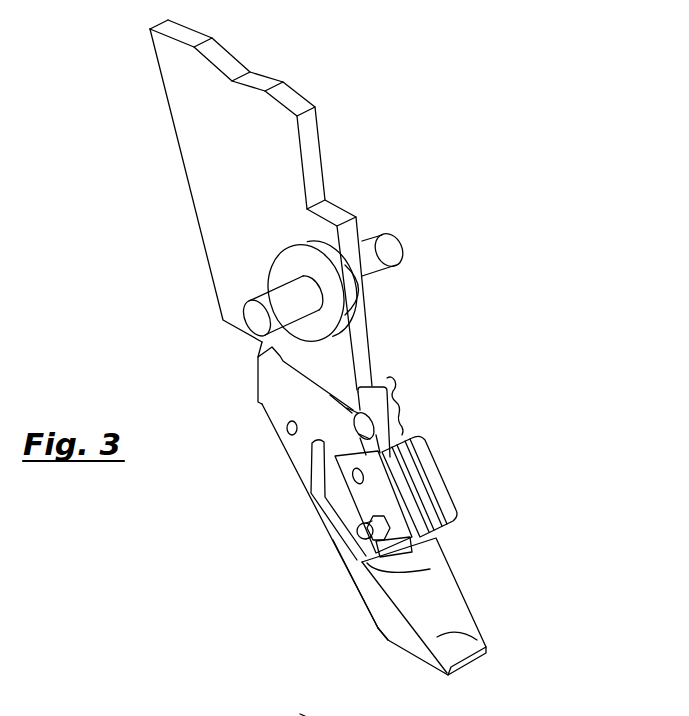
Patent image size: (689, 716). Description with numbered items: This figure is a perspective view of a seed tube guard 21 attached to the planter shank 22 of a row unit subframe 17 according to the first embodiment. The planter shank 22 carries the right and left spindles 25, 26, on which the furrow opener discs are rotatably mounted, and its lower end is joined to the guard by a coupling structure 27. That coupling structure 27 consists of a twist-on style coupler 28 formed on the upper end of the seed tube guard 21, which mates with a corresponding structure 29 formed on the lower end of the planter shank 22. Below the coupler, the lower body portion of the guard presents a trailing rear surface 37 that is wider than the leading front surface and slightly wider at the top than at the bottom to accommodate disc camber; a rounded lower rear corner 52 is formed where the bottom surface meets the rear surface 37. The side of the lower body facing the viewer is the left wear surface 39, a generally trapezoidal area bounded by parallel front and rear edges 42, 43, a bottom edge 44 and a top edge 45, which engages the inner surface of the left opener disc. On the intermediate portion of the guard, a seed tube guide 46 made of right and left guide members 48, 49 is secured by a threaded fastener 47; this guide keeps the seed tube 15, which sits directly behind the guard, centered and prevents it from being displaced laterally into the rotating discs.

The seed tube 15 is at (302, 714).
The row unit subframe 17 is at (185, 93).
The seed tube guard 21 is at (525, 508).
The planter shank 22 is at (228, 199).
The right spindle 25 is at (384, 245).
The left spindle 26 is at (270, 302).
The coupling structure 27 is at (408, 378).
The twist-on style coupler 28 is at (283, 403).
The corresponding structure 29 is at (340, 424).
The trailing rear surface 37 is at (453, 608).
The left wear surface 39 is at (378, 592).
The front edge 42 is at (370, 611).
The rear edge 43 is at (477, 632).
The bottom edge 44 is at (410, 650).
The top edge 45 is at (430, 569).
The seed tube guide 46 is at (395, 480).
The threaded fastener 47 is at (362, 535).
The right guide member 48 is at (428, 482).
The left guide member 49 is at (372, 492).
The rounded lower rear corner 52 is at (473, 658).